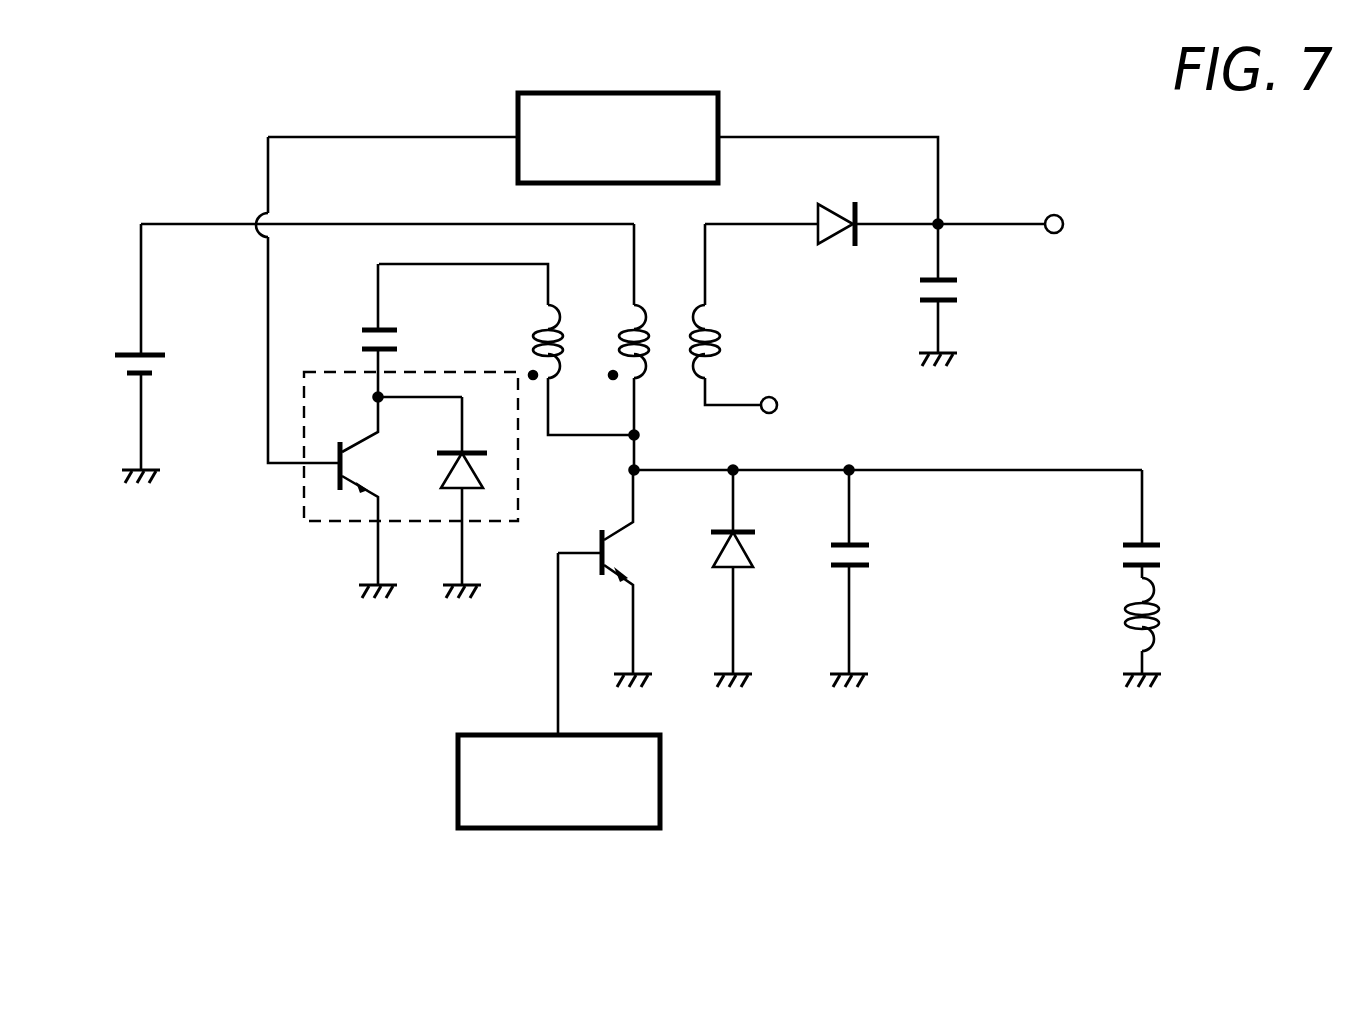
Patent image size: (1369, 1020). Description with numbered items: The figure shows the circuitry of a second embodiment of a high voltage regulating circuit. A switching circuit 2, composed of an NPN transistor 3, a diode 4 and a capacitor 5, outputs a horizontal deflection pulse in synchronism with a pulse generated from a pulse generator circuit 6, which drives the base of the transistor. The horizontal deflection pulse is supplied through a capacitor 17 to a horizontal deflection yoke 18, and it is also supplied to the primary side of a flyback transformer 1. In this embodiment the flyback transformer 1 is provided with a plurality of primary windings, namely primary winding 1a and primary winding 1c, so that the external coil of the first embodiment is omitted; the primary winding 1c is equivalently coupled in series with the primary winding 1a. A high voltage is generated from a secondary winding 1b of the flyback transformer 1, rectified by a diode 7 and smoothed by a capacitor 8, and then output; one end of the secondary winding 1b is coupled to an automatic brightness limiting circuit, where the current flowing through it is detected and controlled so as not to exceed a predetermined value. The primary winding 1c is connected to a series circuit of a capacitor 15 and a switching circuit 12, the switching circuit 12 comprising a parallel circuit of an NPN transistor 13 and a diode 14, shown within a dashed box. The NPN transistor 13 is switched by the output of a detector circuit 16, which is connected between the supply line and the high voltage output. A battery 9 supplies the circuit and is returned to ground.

The flyback transformer 1 is at (675, 349).
The primary winding 1a is at (652, 305).
The secondary winding 1b is at (716, 315).
The primary winding 1c is at (572, 305).
The switching circuit 2 is at (866, 588).
The NPN transistor 3 is at (626, 560).
The diode 4 is at (750, 556).
The capacitor 5 is at (871, 552).
The pulse generator circuit 6 is at (660, 754).
The diode 7 is at (836, 204).
The capacitor 8 is at (958, 290).
The power supply 9 is at (160, 366).
The switching circuit 12 is at (405, 446).
The NPN transistor 13 is at (347, 496).
The diode 14 is at (470, 494).
The capacitor 15 is at (360, 337).
The detector circuit 16 is at (718, 104).
The capacitor 17 is at (1160, 558).
The horizontal deflection yoke 18 is at (1165, 618).